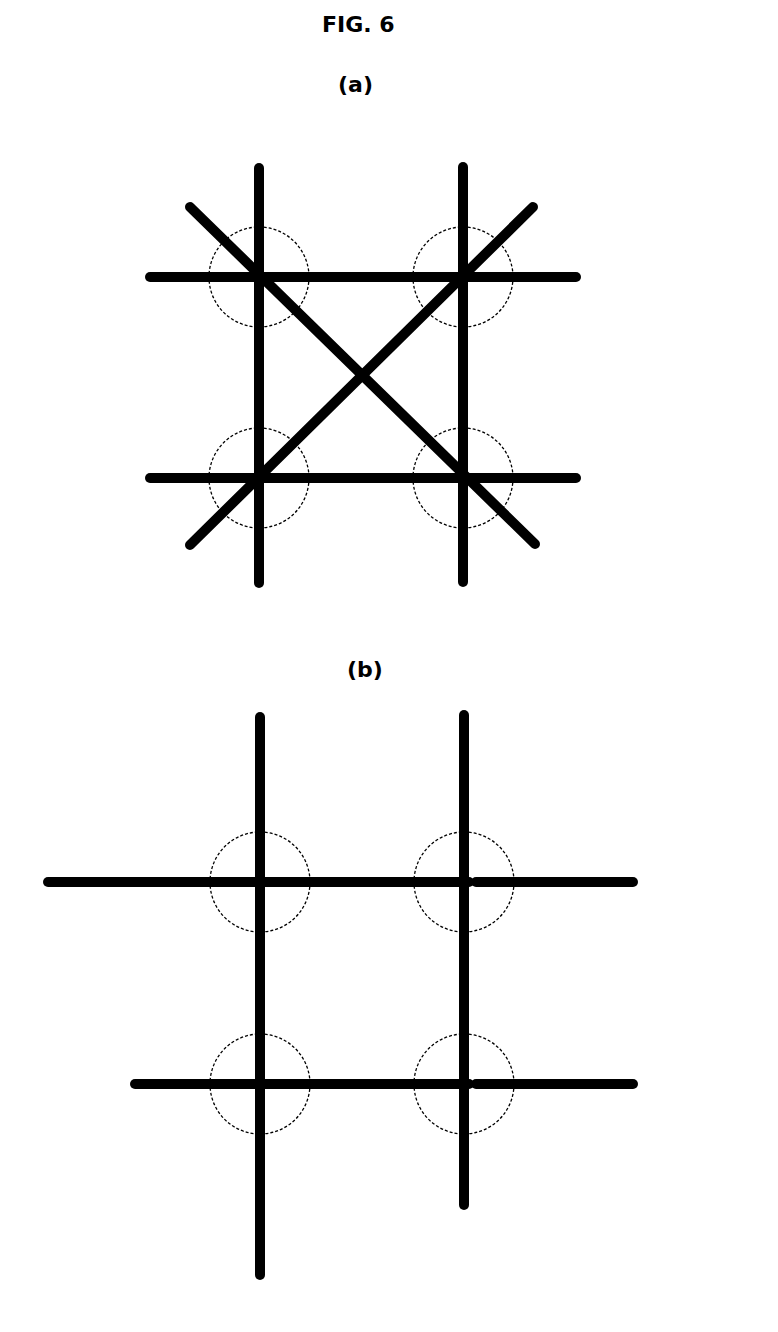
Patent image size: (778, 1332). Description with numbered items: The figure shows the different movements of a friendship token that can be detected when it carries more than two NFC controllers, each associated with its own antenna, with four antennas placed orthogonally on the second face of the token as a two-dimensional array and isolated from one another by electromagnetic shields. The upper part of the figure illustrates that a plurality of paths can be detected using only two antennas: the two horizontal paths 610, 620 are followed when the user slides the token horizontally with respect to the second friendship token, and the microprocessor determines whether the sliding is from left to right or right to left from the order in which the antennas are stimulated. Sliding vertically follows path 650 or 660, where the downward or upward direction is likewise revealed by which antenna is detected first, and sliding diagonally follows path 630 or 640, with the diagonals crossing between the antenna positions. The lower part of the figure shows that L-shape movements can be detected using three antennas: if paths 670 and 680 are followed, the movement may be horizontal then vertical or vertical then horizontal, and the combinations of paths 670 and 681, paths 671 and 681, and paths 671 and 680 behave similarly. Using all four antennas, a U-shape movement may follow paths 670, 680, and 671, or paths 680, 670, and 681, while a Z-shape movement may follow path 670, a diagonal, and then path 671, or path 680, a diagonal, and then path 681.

The path 610 is at (580, 276).
The path 620 is at (580, 477).
The path 630 is at (527, 227).
The path 640 is at (545, 563).
The path 650 is at (465, 590).
The path 660 is at (260, 590).
The path 670 is at (633, 882).
The path 671 is at (633, 1084).
The path 680 is at (458, 752).
The path 681 is at (257, 740).